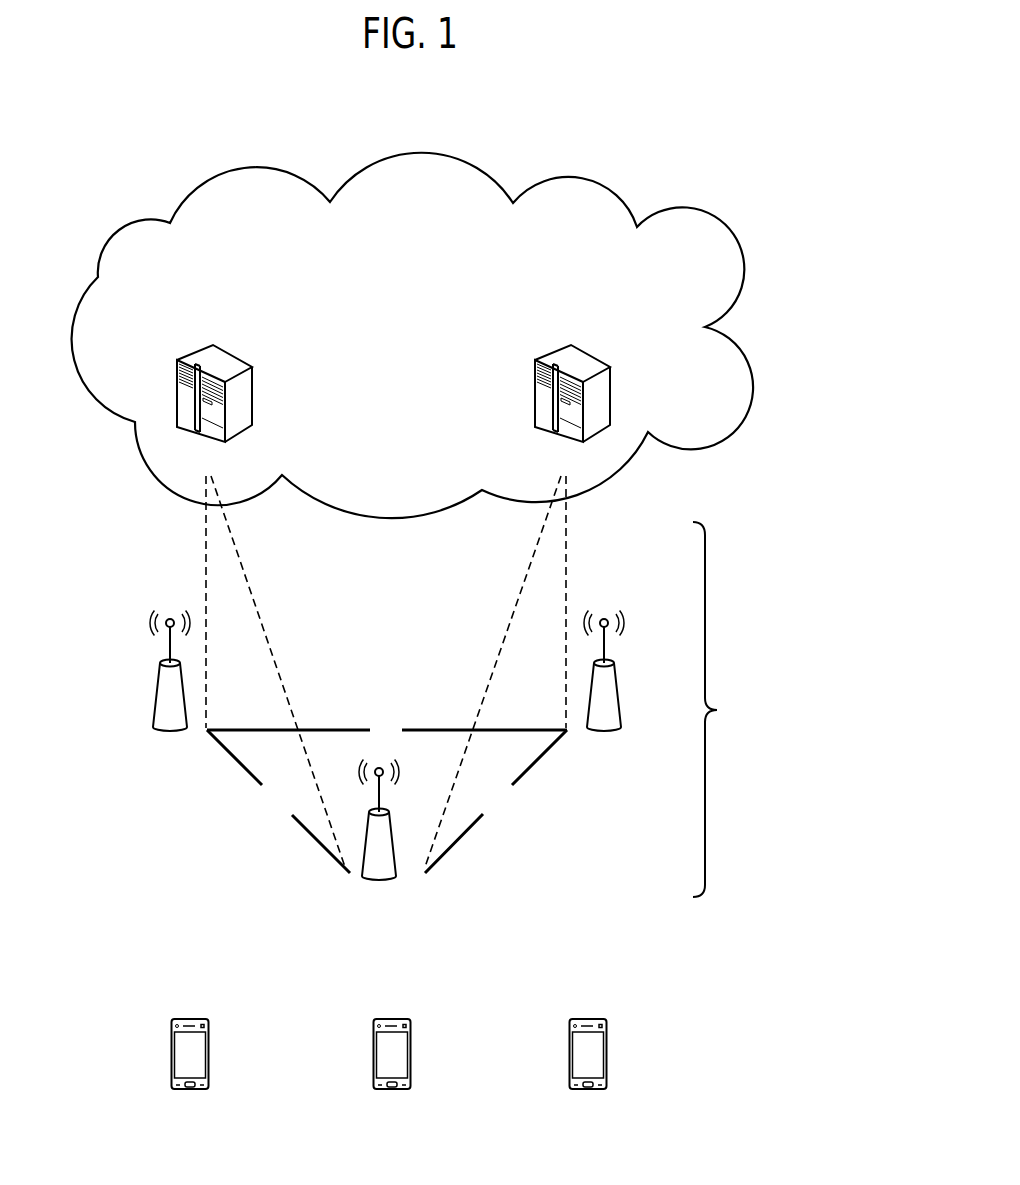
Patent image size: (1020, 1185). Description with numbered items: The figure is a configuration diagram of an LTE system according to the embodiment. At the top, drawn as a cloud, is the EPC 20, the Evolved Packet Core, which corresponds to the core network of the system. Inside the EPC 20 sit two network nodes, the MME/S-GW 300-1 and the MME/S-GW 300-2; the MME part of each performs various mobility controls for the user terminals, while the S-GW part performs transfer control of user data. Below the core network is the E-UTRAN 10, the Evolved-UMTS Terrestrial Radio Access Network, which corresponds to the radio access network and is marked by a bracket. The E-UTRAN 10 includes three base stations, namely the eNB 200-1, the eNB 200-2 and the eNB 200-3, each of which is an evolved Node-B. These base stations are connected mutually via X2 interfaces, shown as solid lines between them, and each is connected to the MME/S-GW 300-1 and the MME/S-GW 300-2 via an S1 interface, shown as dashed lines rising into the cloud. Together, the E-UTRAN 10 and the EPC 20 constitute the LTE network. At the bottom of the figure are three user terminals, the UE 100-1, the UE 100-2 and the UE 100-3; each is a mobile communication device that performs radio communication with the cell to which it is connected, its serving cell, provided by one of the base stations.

The EPC 20 is at (615, 193).
The MME/S-GW 300-1 is at (234, 356).
The MME/S-GW 300-2 is at (603, 329).
The E-UTRAN 10 is at (503, 686).
The eNB 200-1 is at (157, 696).
The eNB 200-2 is at (397, 855).
The eNB 200-3 is at (617, 677).
The UE 100-1 is at (192, 1019).
The UE 100-2 is at (394, 1019).
The UE 100-3 is at (589, 1019).